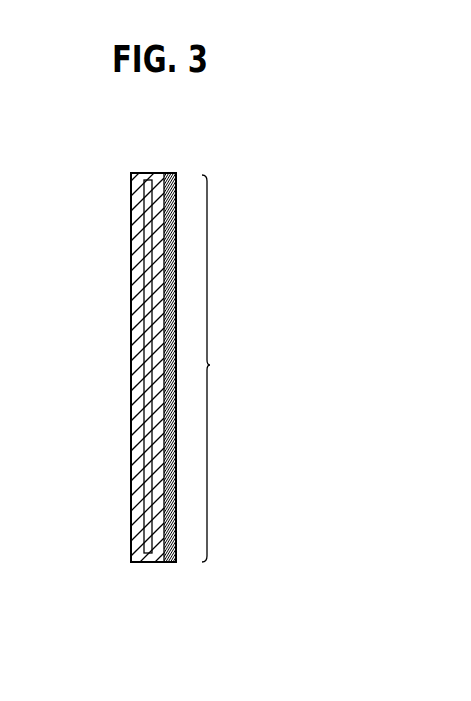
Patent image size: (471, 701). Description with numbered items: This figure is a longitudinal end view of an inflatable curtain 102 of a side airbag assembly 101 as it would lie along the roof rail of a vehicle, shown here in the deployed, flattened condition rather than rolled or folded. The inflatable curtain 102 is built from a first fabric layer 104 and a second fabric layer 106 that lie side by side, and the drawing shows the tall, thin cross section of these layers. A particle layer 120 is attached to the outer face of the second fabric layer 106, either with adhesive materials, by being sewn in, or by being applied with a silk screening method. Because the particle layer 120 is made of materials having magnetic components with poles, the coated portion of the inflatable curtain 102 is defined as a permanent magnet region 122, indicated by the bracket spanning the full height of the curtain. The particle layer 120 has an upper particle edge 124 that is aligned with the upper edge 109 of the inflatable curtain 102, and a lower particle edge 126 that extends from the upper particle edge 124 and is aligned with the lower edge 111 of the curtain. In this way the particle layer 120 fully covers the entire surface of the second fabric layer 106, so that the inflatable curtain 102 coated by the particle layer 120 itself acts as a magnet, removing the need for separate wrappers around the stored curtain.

The electrode assembly / battery cell 101 is at (272, 141).
The inflatable curtain 102 is at (131, 433).
The first fabric layer 104 is at (136, 290).
The second fabric layer 106 is at (160, 440).
The upper edge 109 is at (138, 168).
The lower edge 111 is at (128, 569).
The particle layer 120 is at (176, 284).
The permanent magnet region 122 is at (208, 365).
The upper particle edge 124 is at (180, 167).
The lower particle edge 126 is at (180, 569).